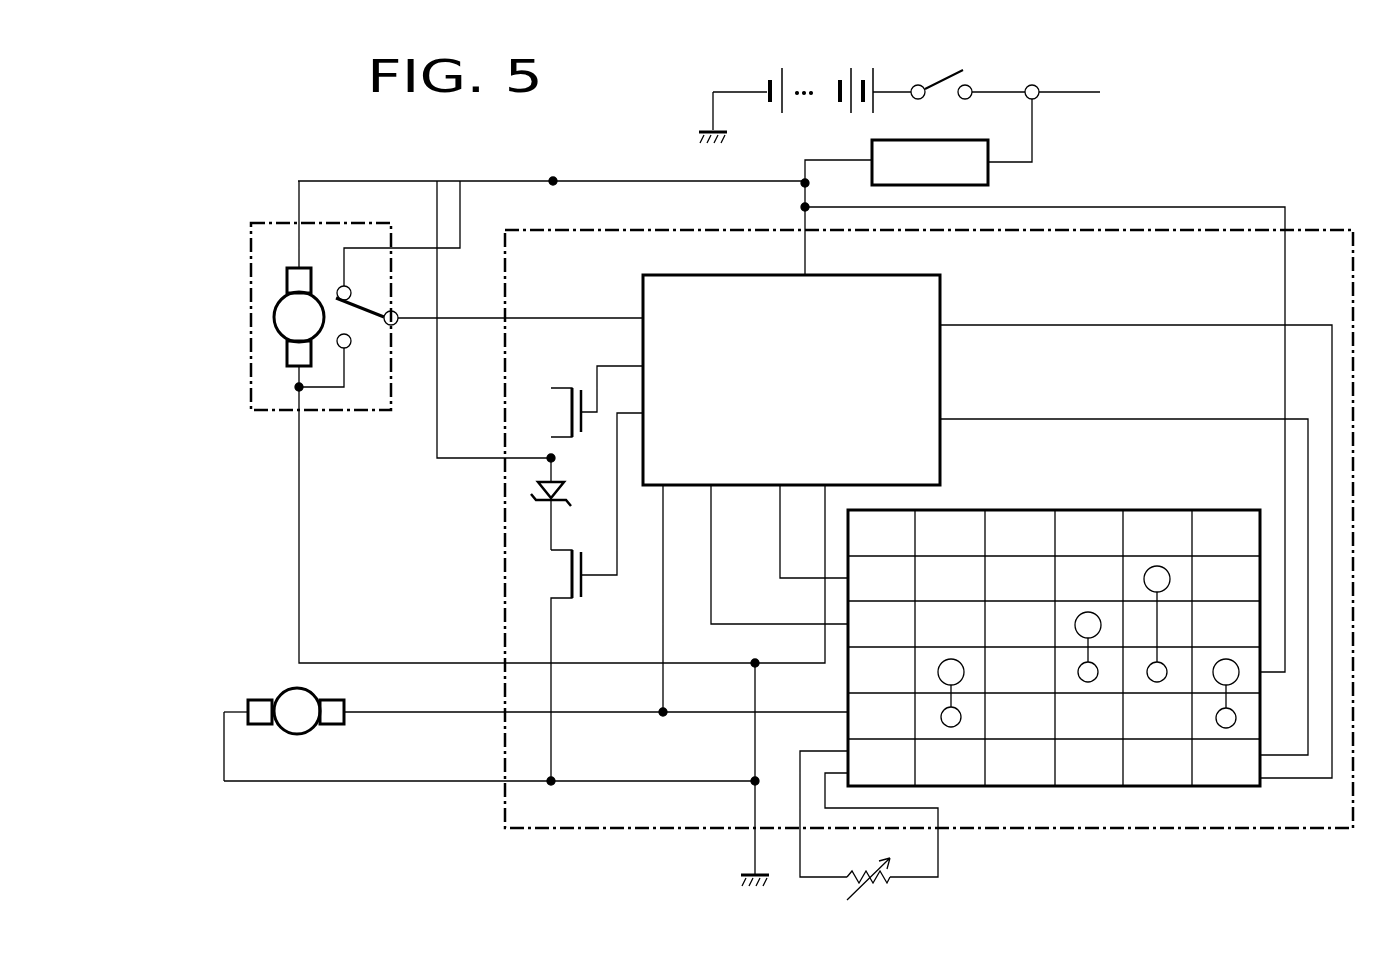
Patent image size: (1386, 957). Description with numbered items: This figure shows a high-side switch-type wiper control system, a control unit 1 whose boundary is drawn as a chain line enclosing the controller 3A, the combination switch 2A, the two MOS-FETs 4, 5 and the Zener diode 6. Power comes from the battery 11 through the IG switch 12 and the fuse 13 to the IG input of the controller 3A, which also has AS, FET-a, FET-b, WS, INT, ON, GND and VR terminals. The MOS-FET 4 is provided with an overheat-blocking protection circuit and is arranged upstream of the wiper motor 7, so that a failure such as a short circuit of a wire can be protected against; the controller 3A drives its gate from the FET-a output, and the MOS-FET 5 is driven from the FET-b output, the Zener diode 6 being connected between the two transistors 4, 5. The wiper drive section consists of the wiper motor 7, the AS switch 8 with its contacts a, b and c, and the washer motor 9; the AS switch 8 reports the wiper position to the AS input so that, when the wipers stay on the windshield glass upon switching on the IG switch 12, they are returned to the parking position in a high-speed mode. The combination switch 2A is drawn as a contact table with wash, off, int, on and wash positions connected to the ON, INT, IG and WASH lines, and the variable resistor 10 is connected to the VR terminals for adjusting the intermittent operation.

The wiper control unit 1 is at (1315, 230).
The wiper switch 2A is at (1170, 510).
The controller 3A is at (873, 275).
The MOS-FET 4 is at (563, 414).
The MOS-FET 5 is at (563, 578).
The Zener diode 6 is at (566, 480).
The wiper motor 7 is at (277, 299).
The AS switch 8 is at (357, 327).
The washer motor 9 is at (290, 688).
The variable resistor 10 is at (880, 890).
The battery 11 is at (838, 68).
The IG switch 12 is at (970, 80).
The fuse 13 is at (945, 138).